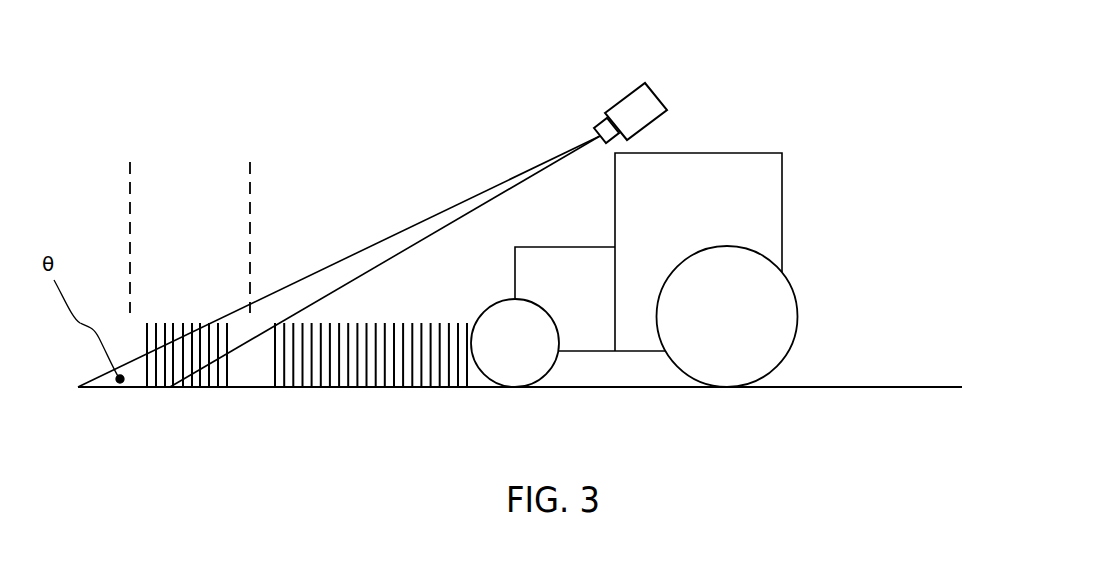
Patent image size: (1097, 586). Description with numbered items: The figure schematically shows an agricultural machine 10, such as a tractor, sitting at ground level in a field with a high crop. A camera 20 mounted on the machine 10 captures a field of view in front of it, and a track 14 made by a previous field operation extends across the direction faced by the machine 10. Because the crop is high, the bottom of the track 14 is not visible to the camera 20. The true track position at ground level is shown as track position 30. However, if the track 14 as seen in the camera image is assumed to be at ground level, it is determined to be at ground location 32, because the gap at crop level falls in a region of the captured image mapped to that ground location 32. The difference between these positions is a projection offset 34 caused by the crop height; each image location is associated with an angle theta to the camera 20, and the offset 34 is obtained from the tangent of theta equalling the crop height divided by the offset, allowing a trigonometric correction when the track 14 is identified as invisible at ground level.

The agricultural machine 10 is at (745, 110).
The track 14 is at (260, 367).
The camera 20 is at (623, 100).
The track position at ground level 30 is at (228, 390).
The ground location 32 is at (153, 390).
The projection offset 34 is at (247, 257).